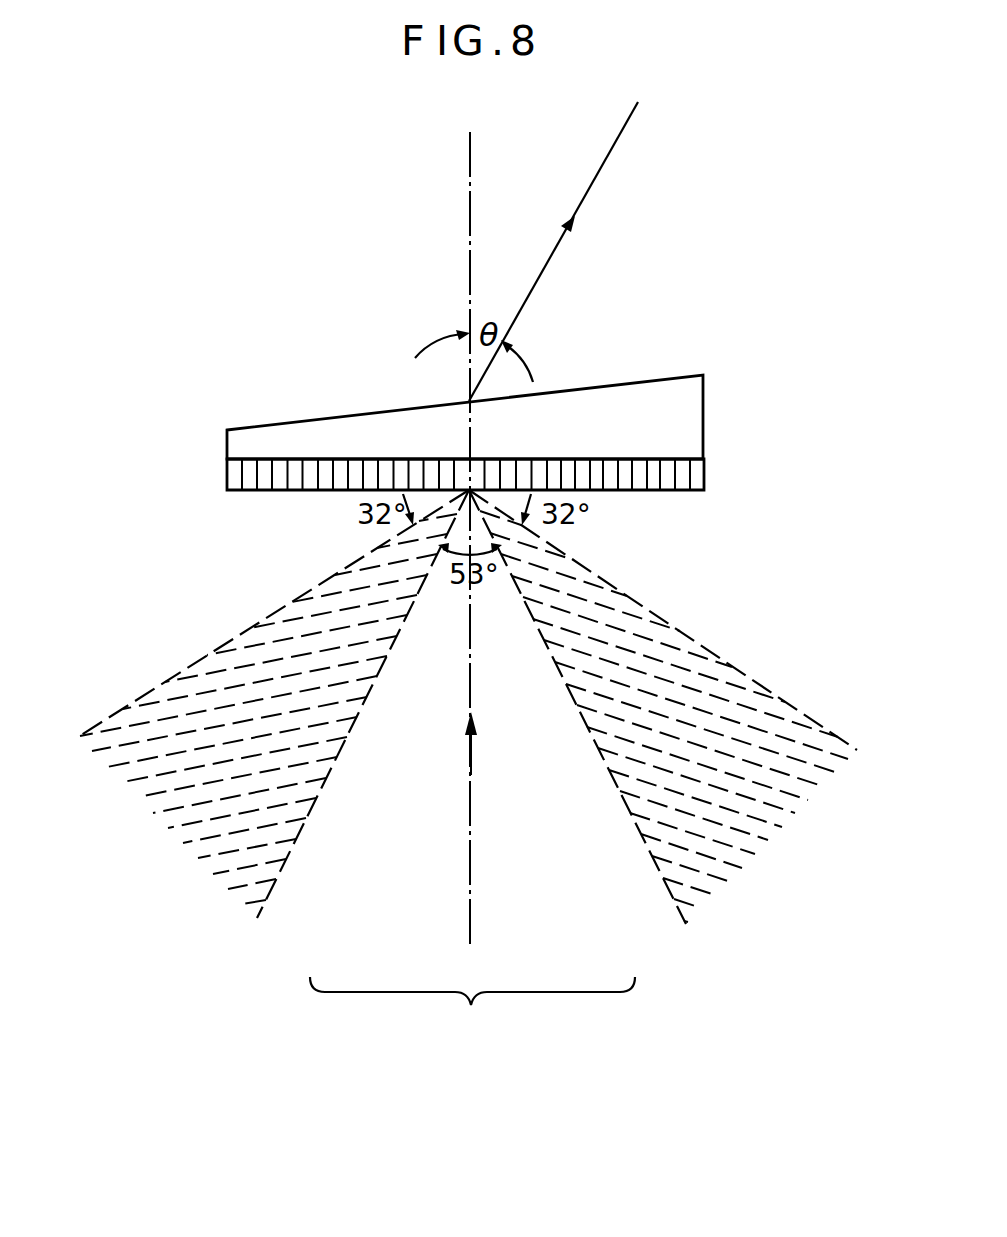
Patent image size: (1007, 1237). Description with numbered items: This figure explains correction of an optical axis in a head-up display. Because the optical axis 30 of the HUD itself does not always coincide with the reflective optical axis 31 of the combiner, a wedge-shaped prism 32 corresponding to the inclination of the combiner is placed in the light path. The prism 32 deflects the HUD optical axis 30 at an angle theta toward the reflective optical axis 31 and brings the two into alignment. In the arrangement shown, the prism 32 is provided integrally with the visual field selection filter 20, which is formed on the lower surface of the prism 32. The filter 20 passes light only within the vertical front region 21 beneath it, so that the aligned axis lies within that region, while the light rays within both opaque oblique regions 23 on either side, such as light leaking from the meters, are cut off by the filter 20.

The visual field selection filter 20 is at (697, 473).
The vertical front region 21 is at (472, 1016).
The oblique region 23 is at (151, 809).
The optical axis of HUD 30 is at (473, 770).
The reflective optical axis of combiner 31 is at (597, 177).
The prism 32 is at (692, 418).